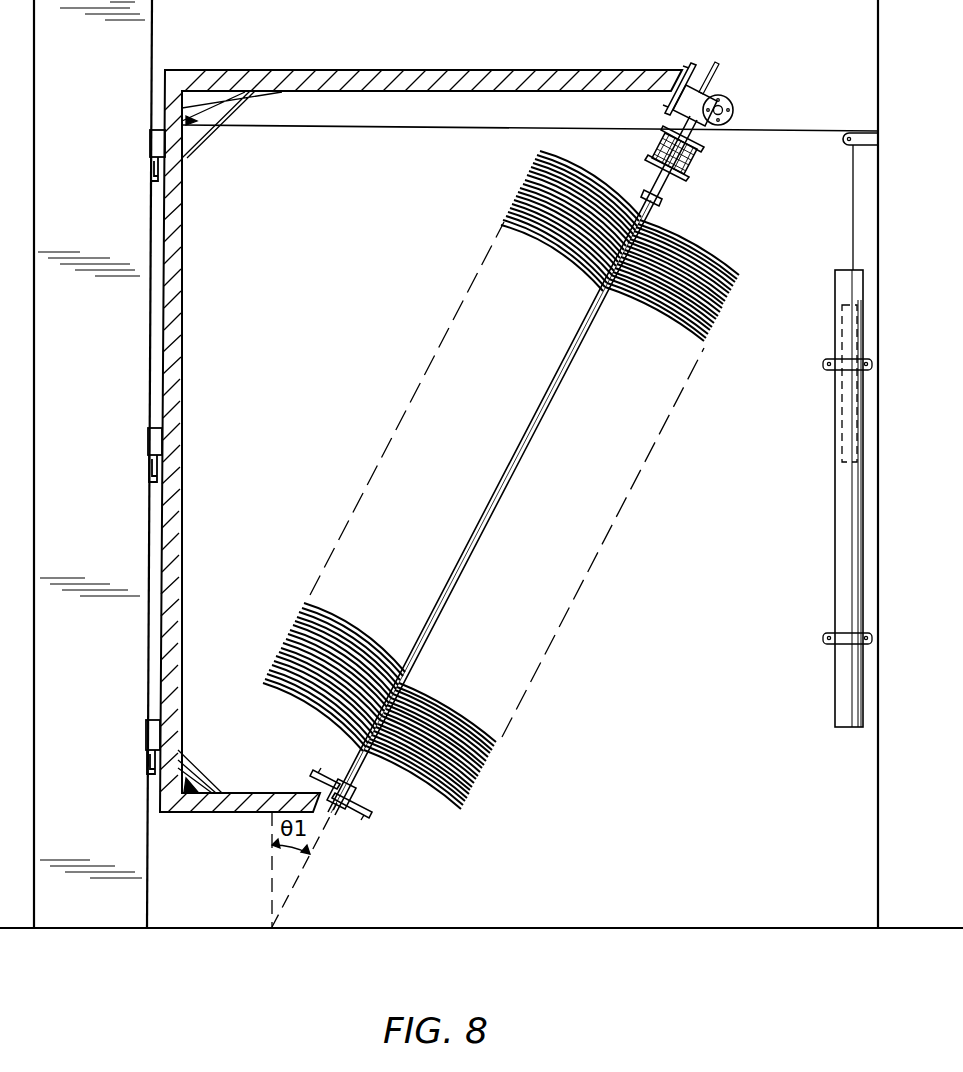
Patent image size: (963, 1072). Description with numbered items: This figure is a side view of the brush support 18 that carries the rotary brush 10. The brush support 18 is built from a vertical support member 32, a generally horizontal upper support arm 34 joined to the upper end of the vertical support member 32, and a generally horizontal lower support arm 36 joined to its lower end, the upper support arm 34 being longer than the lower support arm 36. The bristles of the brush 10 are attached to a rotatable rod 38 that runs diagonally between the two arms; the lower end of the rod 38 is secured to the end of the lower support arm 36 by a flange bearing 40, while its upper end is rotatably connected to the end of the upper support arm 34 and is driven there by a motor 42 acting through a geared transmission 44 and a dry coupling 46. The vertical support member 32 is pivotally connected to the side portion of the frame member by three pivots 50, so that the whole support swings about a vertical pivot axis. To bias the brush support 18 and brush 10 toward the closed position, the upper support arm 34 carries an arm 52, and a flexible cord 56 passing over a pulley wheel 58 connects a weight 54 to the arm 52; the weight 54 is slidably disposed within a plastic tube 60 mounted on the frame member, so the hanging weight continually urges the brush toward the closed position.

The brush 10 is at (521, 480).
The brush support 18 is at (492, 66).
The vertical support member 32 is at (186, 252).
The upper support arm 34 is at (375, 70).
The lower support arm 36 is at (218, 813).
The rotatable rod 38 is at (662, 200).
The flange bearing 40 is at (355, 808).
The motor 42 is at (733, 100).
The geared transmission 44 is at (690, 96).
The dry coupling 46 is at (700, 160).
The pivots 50 is at (150, 143).
The arm 52 is at (255, 97).
The weight 54 is at (842, 415).
The flexible cord 56 is at (398, 128).
The pulley wheel 58 is at (848, 134).
The plastic tube 60 is at (835, 543).